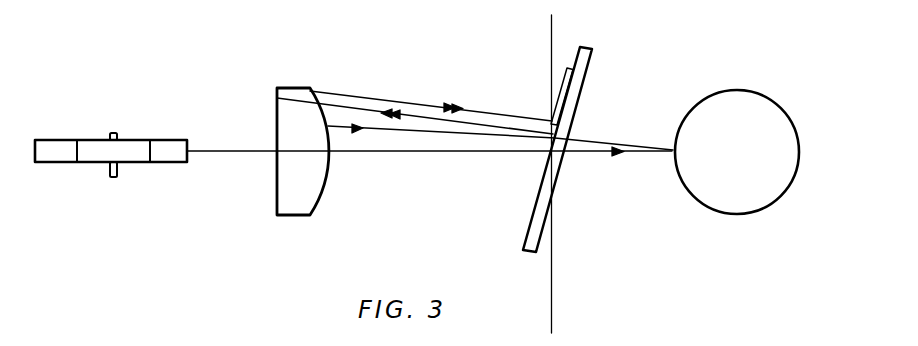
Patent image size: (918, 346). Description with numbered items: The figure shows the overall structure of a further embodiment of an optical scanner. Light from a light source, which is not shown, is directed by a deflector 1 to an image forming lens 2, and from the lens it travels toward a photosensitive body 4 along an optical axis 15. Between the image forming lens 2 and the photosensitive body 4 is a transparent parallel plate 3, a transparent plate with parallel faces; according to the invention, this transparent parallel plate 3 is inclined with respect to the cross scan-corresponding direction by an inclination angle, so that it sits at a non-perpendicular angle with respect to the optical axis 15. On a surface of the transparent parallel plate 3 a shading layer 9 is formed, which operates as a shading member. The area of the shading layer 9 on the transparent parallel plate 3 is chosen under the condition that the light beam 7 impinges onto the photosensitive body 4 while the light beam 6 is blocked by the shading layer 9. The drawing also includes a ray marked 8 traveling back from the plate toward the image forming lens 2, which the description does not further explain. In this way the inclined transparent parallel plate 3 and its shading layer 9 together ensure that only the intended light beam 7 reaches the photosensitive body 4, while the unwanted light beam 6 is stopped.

The deflector 1 is at (167, 140).
The image forming lens 2 is at (292, 216).
The transparent parallel plate 3 is at (591, 58).
The photosensitive body 4 is at (757, 91).
The light beam 6 is at (432, 105).
The light beam 7 is at (452, 132).
The reflected light beam 8 is at (363, 108).
The shading layer 9 is at (562, 70).
The optical axis 15 is at (230, 152).